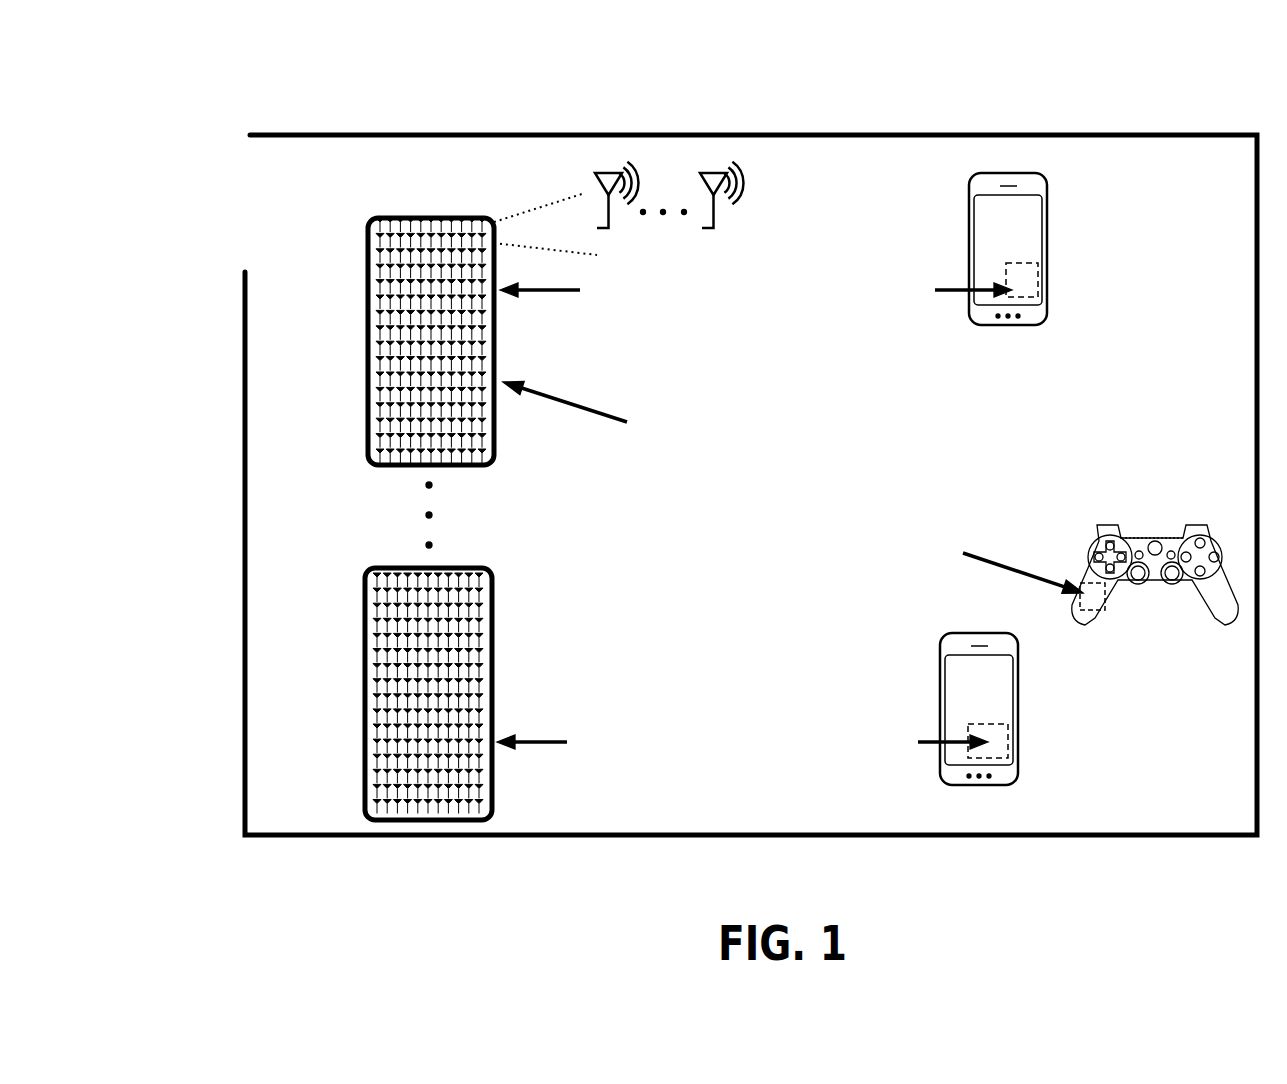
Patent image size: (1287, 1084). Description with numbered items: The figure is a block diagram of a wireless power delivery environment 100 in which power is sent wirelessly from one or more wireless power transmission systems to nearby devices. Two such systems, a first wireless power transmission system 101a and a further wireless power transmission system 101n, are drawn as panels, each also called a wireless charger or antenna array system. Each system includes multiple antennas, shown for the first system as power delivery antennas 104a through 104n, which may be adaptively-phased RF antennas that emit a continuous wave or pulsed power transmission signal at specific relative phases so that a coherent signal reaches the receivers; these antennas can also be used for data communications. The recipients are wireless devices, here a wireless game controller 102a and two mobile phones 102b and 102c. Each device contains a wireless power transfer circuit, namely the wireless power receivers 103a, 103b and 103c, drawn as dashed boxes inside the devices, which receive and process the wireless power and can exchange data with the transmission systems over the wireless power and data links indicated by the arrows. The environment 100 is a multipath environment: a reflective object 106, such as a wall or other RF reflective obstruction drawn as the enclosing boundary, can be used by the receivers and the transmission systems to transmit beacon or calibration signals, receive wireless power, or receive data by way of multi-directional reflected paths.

The wireless power delivery environment 100 is at (221, 85).
The wireless power transmission system 101a is at (368, 330).
The wireless power transmission system 101n is at (365, 668).
The wireless device 102a is at (1138, 524).
The wireless device 102b is at (1056, 220).
The wireless device 102c is at (935, 636).
The wireless power transfer circuit 103a is at (1094, 603).
The wireless power transfer circuit 103b is at (1022, 280).
The wireless power transfer circuit 103c is at (1000, 740).
The power delivery antenna 104a is at (572, 211).
The power delivery antenna 104n is at (699, 211).
The reflective object 106 is at (800, 137).